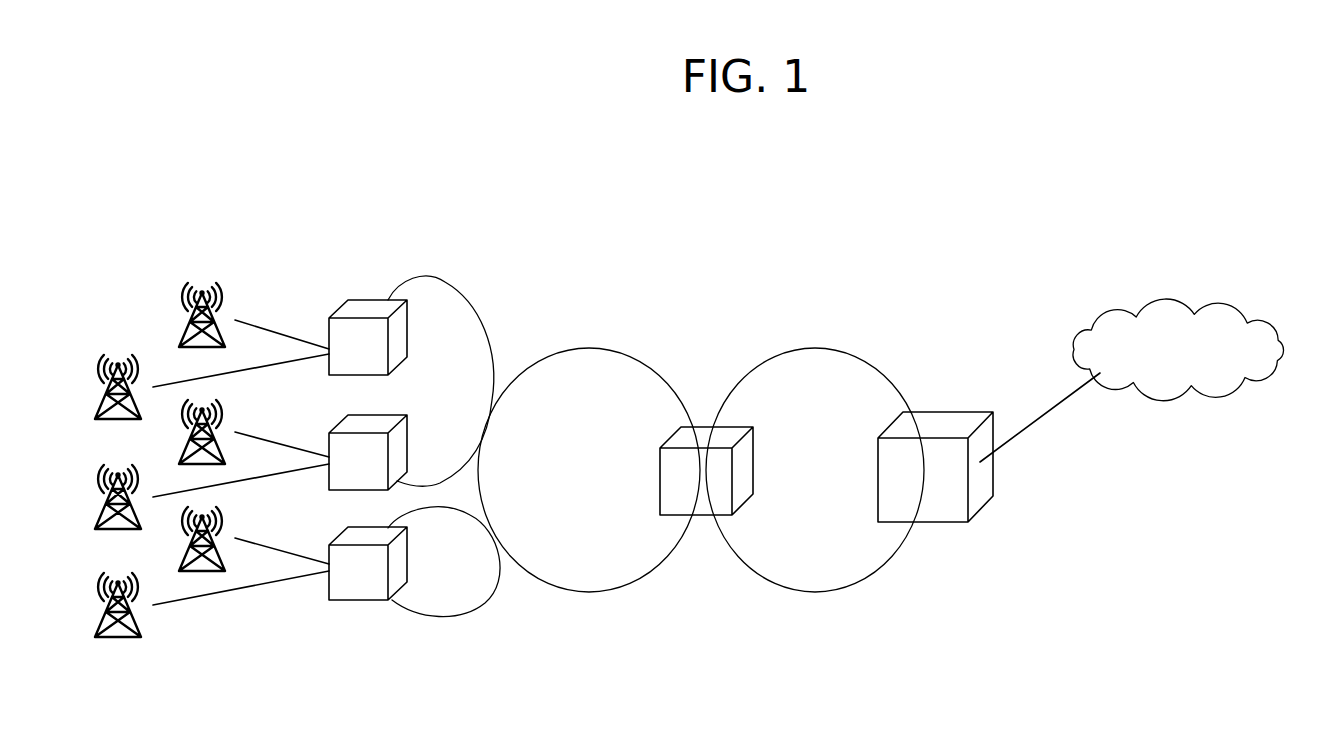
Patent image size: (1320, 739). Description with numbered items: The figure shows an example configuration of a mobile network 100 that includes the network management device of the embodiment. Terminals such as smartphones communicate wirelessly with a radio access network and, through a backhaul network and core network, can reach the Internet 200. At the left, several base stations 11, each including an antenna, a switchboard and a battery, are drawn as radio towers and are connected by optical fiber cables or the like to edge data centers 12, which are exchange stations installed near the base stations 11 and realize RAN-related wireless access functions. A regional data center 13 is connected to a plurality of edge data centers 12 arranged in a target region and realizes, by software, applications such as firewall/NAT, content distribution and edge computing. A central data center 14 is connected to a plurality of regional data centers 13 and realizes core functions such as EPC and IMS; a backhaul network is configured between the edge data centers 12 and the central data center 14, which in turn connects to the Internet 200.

The base station 11 is at (180, 330).
The edge data center 12 is at (362, 299).
The regional data center 13 is at (703, 427).
The central data center 14 is at (945, 412).
The mobile network 100 is at (847, 276).
The Internet 200 is at (1250, 309).